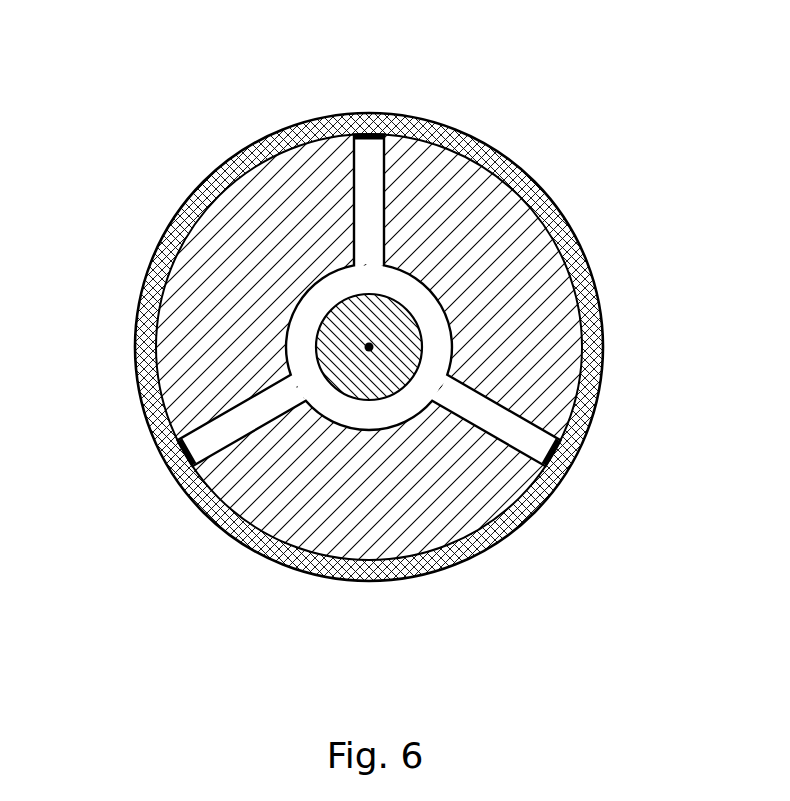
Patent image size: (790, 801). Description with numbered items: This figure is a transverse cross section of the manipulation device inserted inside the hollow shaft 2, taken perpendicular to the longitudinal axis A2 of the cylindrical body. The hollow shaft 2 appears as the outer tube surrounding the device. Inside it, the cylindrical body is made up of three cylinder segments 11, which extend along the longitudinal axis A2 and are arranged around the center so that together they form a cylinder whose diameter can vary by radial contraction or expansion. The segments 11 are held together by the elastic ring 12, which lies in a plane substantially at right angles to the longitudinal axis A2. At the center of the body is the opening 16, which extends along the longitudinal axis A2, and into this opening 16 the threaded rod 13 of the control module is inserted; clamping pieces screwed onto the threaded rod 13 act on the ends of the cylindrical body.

The hollow shaft 2 is at (512, 155).
The cylinder segments 11 is at (243, 218).
The elastic ring 12 is at (377, 130).
The threaded rod 13 is at (418, 342).
The opening 16 is at (302, 338).
The longitudinal axis A2 is at (368, 349).